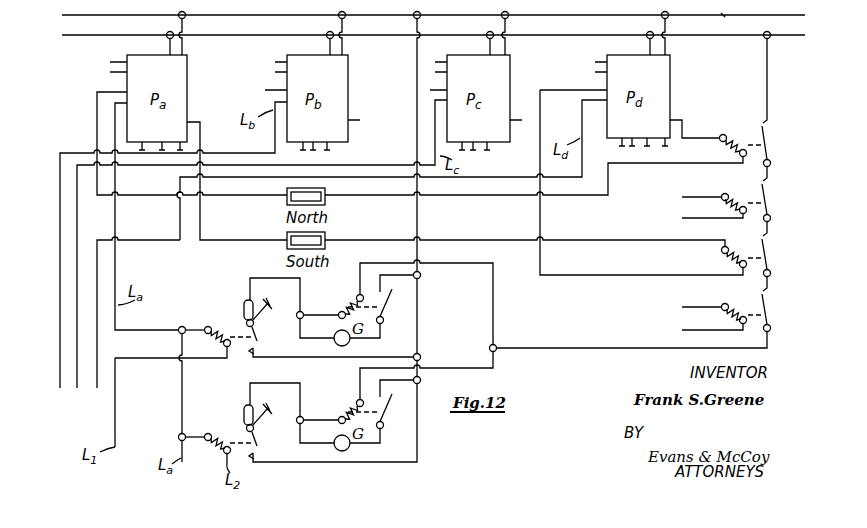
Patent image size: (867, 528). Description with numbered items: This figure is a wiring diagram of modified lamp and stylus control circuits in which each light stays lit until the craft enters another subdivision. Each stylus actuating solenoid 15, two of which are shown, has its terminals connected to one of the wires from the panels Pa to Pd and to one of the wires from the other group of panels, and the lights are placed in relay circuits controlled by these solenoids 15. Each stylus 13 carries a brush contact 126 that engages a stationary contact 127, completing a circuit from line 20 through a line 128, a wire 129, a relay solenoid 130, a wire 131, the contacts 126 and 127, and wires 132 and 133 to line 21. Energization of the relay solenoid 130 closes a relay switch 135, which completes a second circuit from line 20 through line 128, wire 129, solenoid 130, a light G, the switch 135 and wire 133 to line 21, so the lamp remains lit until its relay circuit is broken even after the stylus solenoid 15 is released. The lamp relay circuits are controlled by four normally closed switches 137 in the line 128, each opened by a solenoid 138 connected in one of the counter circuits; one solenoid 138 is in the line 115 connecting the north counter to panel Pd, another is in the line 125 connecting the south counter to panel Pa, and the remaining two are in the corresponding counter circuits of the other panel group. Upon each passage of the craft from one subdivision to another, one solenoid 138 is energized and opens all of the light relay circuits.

The line 21 is at (424, 8).
The line 20 is at (789, 37).
The line 128 is at (769, 94).
The normally closed switch 137 is at (766, 132).
The solenoid 138 is at (722, 146).
The wire 133 is at (413, 133).
The line 115 is at (547, 199).
The line 125 is at (582, 241).
The wire 129 is at (560, 348).
The stylus 13 is at (244, 318).
The solenoid 15 is at (212, 326).
The brush contact 126 is at (256, 339).
The stationary contact 127 is at (257, 352).
The relay solenoid 130 is at (348, 302).
The wire 131 is at (302, 315).
The wire 132 is at (306, 358).
The relay switch 135 is at (386, 312).